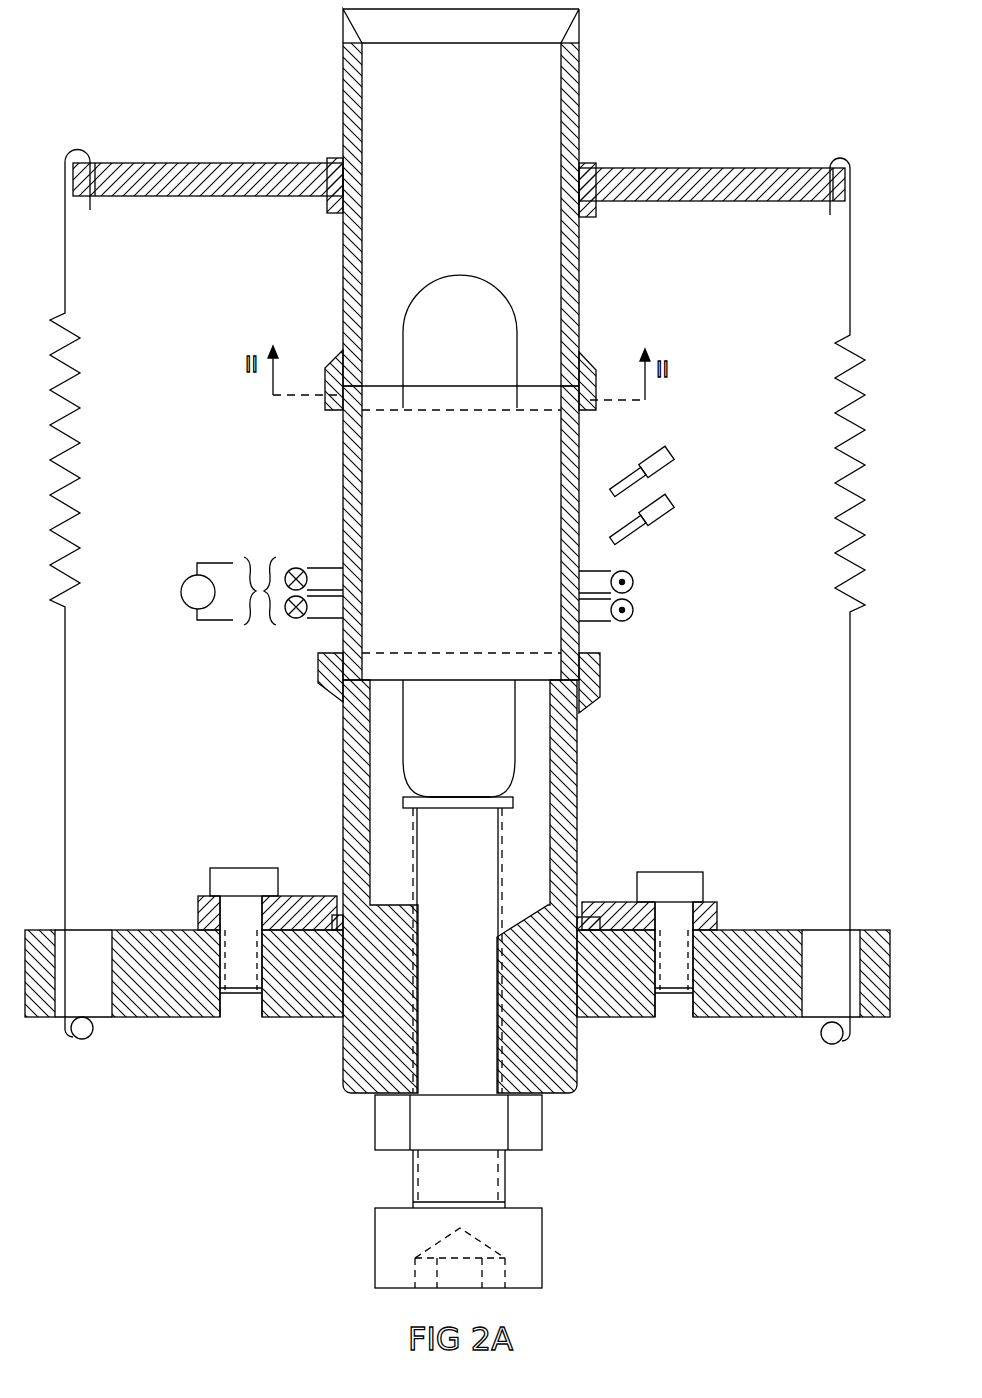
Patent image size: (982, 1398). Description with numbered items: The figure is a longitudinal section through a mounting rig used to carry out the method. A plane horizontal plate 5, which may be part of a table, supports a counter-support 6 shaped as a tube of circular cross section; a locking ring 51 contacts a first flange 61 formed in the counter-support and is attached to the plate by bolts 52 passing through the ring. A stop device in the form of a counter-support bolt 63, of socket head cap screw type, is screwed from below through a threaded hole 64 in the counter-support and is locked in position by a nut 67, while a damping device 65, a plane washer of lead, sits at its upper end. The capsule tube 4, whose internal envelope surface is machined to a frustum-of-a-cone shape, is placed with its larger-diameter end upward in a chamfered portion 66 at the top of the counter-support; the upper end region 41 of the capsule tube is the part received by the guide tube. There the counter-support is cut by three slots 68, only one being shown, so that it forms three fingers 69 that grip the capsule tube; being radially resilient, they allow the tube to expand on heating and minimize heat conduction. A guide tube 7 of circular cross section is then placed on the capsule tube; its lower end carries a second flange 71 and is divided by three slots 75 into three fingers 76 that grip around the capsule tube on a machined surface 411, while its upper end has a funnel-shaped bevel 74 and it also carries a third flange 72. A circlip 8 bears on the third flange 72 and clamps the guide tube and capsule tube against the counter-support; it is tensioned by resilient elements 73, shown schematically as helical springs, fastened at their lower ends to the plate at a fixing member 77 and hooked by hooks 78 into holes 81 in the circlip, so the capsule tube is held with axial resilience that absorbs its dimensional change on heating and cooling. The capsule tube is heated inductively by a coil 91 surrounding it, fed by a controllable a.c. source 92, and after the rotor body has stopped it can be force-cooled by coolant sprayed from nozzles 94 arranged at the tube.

The capsule tube 4 is at (343, 485).
The plane horizontal plate 5 is at (173, 1017).
The counter-support 6 is at (578, 770).
The guide tube 7 is at (579, 103).
The circlip 8 is at (741, 168).
The inner tube top end 41 is at (345, 430).
The locking ring 51 is at (717, 916).
The bolts 52 is at (210, 868).
The first flange 61 is at (598, 902).
The counter-support bolt 63 is at (542, 1248).
The threaded hole 64 is at (545, 1047).
The damping device 65 is at (513, 803).
The chamfered portion 66 is at (578, 735).
The nut 67 is at (542, 1120).
The slots 68 is at (515, 788).
The fingers 69 is at (318, 672).
The second flange 71 is at (596, 367).
The third flange 72 is at (597, 208).
The resilient elements 73 is at (82, 335).
The funnel-shaped bevel 74 is at (579, 22).
The slots 75 is at (517, 290).
The fingers 76 is at (325, 375).
The fixing member 77 is at (92, 1037).
The hooks 78 is at (78, 152).
The holes 81 is at (100, 196).
The coil 91 is at (647, 593).
The controllable a.c. source 92 is at (181, 592).
The nozzles 94 is at (700, 475).
The machined surface 411 is at (335, 410).